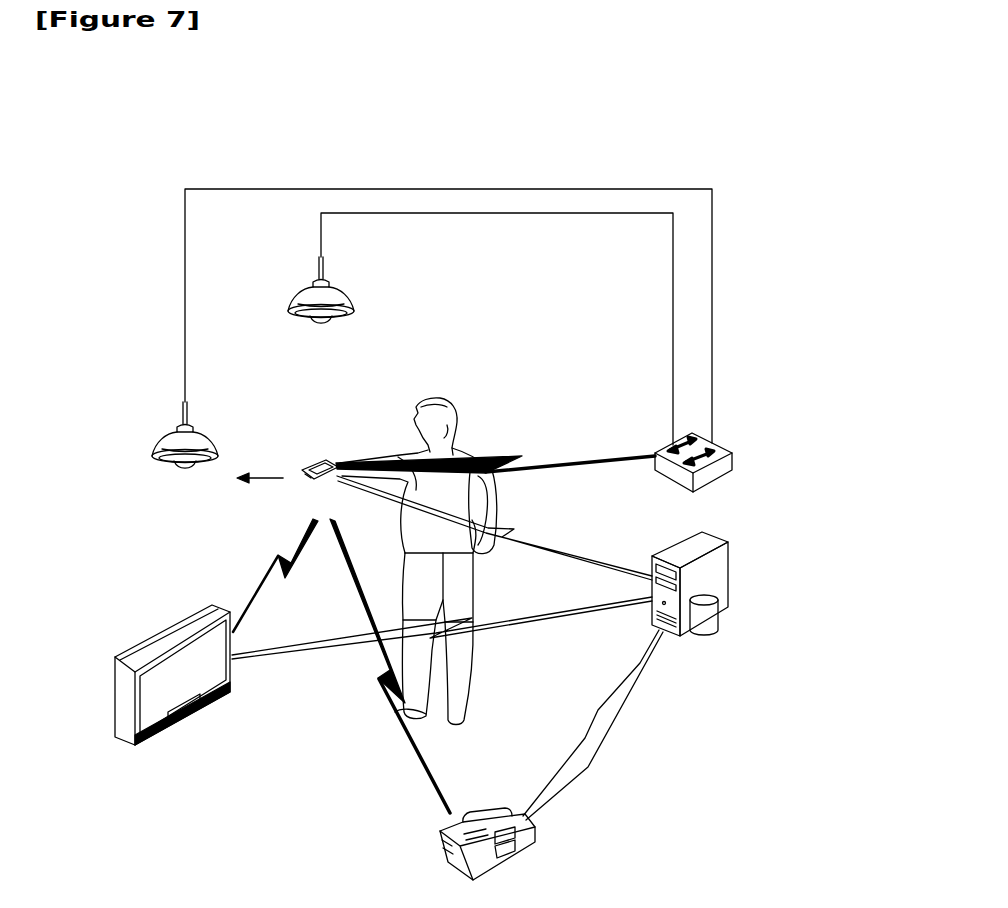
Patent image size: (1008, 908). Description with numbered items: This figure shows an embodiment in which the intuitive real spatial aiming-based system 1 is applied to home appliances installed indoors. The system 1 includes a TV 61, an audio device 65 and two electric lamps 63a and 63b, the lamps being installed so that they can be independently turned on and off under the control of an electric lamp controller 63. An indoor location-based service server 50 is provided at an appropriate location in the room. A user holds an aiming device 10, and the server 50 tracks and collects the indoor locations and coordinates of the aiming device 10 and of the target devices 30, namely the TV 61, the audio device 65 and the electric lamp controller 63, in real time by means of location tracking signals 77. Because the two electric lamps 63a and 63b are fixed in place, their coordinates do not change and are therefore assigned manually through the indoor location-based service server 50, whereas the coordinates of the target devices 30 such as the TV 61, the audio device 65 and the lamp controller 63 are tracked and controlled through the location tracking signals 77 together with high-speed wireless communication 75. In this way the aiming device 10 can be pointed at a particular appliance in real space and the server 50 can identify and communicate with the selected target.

The intuitive real spatial aiming-based system 1 is at (716, 134).
The aiming device 10 is at (315, 468).
The target devices 30 is at (117, 295).
The indoor location-based service server 50 is at (728, 578).
The TV 61 is at (160, 642).
The electric lamp controller 63 is at (665, 448).
The electric lamp 63a is at (177, 442).
The electric lamp 63b is at (310, 299).
The audio device 65 is at (524, 850).
The high-speed wireless communication 75 is at (345, 558).
The location tracking signals 77 is at (560, 557).